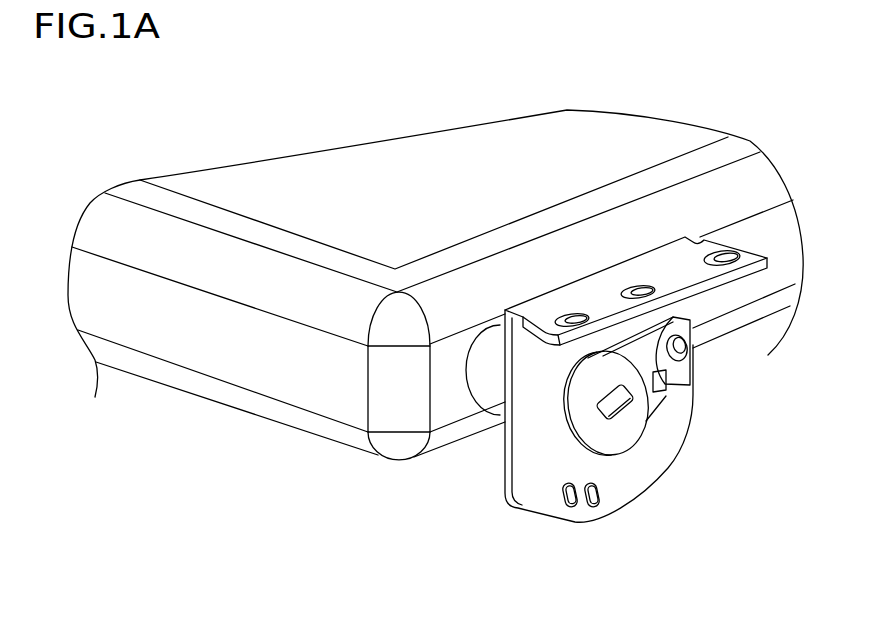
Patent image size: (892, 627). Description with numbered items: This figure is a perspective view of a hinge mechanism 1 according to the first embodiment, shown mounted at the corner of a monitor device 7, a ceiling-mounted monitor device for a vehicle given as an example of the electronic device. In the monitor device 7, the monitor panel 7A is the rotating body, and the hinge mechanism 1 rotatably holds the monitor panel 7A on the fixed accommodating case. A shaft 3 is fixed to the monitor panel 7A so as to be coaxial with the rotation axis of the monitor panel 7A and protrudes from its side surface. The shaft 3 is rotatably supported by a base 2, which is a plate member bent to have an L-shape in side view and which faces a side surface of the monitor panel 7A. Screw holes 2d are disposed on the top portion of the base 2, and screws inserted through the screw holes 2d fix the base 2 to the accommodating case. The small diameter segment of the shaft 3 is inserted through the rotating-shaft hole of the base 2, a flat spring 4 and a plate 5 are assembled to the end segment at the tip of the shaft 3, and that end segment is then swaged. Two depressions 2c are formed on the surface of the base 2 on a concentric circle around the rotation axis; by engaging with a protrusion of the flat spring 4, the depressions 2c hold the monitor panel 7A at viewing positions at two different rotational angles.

The hinge mechanism 1 is at (702, 489).
The base 2 is at (672, 435).
The depressions 2c is at (572, 512).
The screw holes 2d is at (572, 318).
The shaft 3 is at (478, 373).
The flat spring 4 is at (657, 388).
The plate 5 is at (613, 407).
The monitor device 7 is at (232, 425).
The monitor panel 7A is at (297, 177).